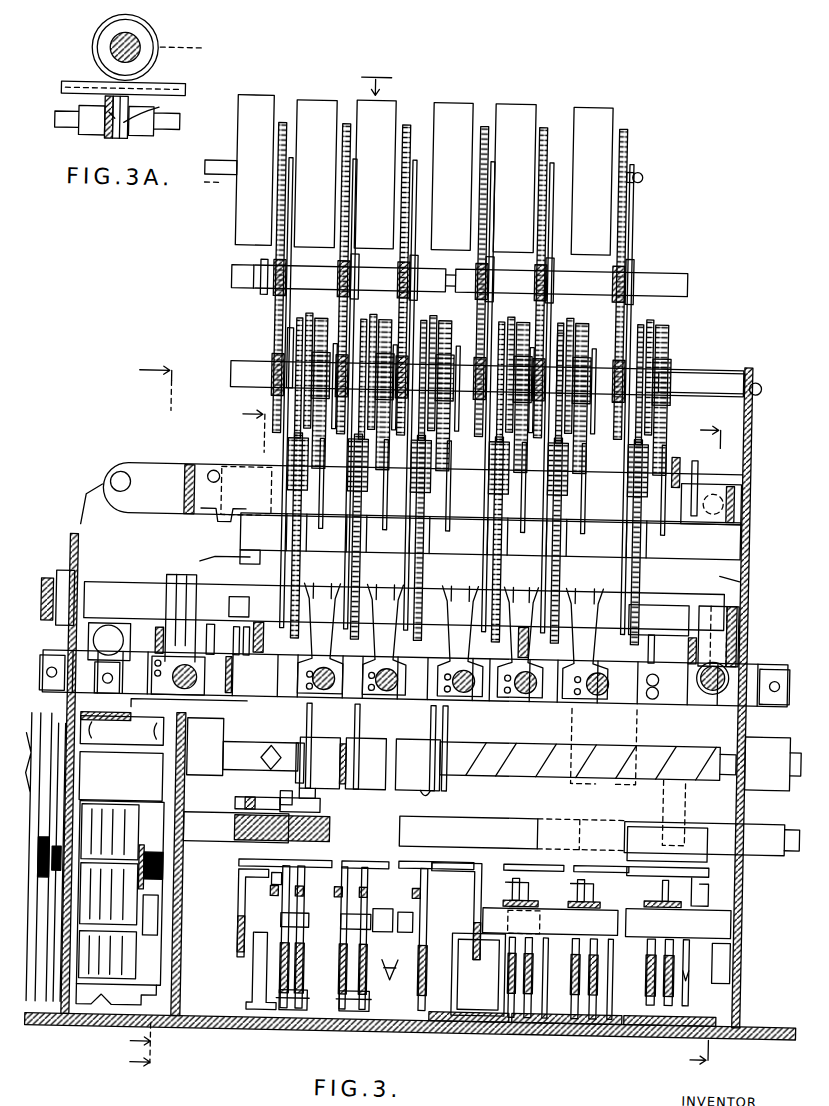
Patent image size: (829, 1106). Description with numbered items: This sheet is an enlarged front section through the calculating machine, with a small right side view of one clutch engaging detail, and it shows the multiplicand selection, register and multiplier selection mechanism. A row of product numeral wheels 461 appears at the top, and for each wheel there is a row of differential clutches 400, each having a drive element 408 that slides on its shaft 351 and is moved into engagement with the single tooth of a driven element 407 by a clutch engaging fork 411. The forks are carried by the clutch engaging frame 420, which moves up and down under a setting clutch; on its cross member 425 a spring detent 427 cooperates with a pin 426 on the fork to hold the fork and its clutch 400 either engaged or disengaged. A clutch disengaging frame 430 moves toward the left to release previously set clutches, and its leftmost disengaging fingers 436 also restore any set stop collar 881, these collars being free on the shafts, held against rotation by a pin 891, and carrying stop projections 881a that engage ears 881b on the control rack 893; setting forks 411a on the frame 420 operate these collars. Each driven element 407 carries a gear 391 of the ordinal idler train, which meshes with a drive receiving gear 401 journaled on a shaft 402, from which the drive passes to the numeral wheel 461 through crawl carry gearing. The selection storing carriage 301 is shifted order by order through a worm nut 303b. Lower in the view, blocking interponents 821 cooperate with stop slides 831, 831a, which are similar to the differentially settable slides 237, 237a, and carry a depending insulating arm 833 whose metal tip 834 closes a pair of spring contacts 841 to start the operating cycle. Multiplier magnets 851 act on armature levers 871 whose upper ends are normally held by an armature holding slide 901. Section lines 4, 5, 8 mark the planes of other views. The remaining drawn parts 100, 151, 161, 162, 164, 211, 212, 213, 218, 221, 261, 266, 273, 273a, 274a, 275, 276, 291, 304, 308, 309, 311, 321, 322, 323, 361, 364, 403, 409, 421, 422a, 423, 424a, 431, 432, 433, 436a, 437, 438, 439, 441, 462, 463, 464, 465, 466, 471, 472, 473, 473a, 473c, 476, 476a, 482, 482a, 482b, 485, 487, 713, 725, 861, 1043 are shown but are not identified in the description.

In FIG. 3, the machine 100 is at (376, 78).
In FIG. 3, the shaft 151 is at (478, 816).
In FIG. 3, the shaft 161 is at (190, 828).
In FIG. 3, the coil housing 162 is at (189, 860).
In FIG. 3, the frame plate 164 is at (750, 888).
In FIG. 3, the sleeve 211 is at (340, 834).
In FIG. 3, the rod 212 is at (348, 944).
In FIG. 3, the guide 213 is at (310, 900).
In FIG. 3, the block 218 is at (325, 806).
In FIG. 3, the collar 221 is at (482, 809).
In FIG. 3, the differentially settable slide 237 is at (323, 1001).
In FIG. 3, the differentially settable slide 237a is at (255, 1008).
In FIG. 3, the pin 261 is at (395, 932).
In FIG. 3, the spring 266 is at (393, 985).
In FIG. 3, the bar 273 is at (372, 900).
In FIG. 3, the bar 273a is at (632, 840).
In FIG. 3, the link 274a is at (575, 826).
In FIG. 3, the bracket 275 is at (245, 890).
In FIG. 3, the channel 276 is at (462, 865).
In FIG. 3, the stop 291 is at (287, 875).
In FIG. 3, the selection storing carriage 301 is at (312, 762).
In FIG. 3, the worm nut 303b is at (470, 774).
In FIG. 3, the lever 304 is at (317, 792).
In FIG. 3, the shaft end 308 is at (590, 741).
In FIG. 3, the bearing block 309 is at (222, 764).
In FIG. 3, the clutch 311 is at (364, 764).
In FIG. 3, the cam 321 is at (446, 762).
In FIG. 3, the sleeve 322 is at (268, 745).
In FIG. 3, the spring 323 is at (420, 801).
In FIG. 3A, the shaft 351 is at (104, 45).
In FIG. 3, the shaft 351 is at (740, 622).
In FIG. 3, the block 361 is at (60, 577).
In FIG. 3, the gear 364 is at (46, 585).
In FIG. 3A, the gear 391 is at (146, 36).
In FIG. 3, the gear 391 is at (659, 620).
In FIG. 3A, the differential clutch 400 is at (198, 45).
In FIG. 3, the differential clutch 400 is at (596, 631).
In FIG. 3, the drive receiving gear 401 is at (246, 554).
In FIG. 3, the shaft 402 is at (240, 538).
In FIG. 3A, the bar 403 is at (150, 88).
In FIG. 3, the bar 403 is at (456, 647).
In FIG. 3, the clutch driven element 407 is at (570, 600).
In FIG. 3, the clutch drive element 408 is at (510, 600).
In FIG. 3, the rocker 409 is at (440, 600).
In FIG. 3A, the clutch engaging fork 411 is at (150, 112).
In FIG. 3, the clutch engaging fork 411 is at (575, 646).
In FIG. 3, the setting fork 411a is at (322, 600).
In FIG. 3, the clutch engaging frame 420 is at (272, 691).
In FIG. 3A, the shaft 421 is at (58, 136).
In FIG. 3, the shaft 421 is at (317, 746).
In FIG. 3, the plate 422a is at (410, 663).
In FIG. 3, the block 423 is at (655, 700).
In FIG. 3, the spacer 424a is at (424, 679).
In FIG. 3A, the cross member 425 is at (100, 112).
In FIG. 3, the cross member 425 is at (460, 740).
In FIG. 3A, the pin 426 is at (116, 136).
In FIG. 3, the pin 426 is at (449, 748).
In FIG. 3A, the spring detent 427 is at (100, 136).
In FIG. 3, the spring detent 427 is at (386, 745).
In FIG. 3, the clutch disengaging frame 430 is at (200, 482).
In FIG. 3, the rail 431 is at (160, 468).
In FIG. 3, the bearing 432 is at (730, 478).
In FIG. 3, the bushing 433 is at (188, 468).
In FIG. 3, the disengaging finger 436 is at (200, 522).
In FIG. 3, the pawl 436a is at (219, 628).
In FIG. 3, the bracket 437 is at (232, 468).
In FIG. 3, the arm 438 is at (765, 574).
In FIG. 3, the shaft 439 is at (110, 640).
In FIG. 3, the shaft 441 is at (735, 668).
In FIG. 3, the product numeral wheel 461 is at (256, 98).
In FIG. 3, the shaft 462 is at (211, 158).
In FIG. 3, the drum 463 is at (282, 130).
In FIG. 3, the chain 464 is at (620, 245).
In FIG. 3, the shaft 465 is at (232, 368).
In FIG. 3, the shaft 466 is at (226, 279).
In FIG. 3, the sprocket 471 is at (340, 268).
In FIG. 3, the sprocket 472 is at (620, 270).
In FIG. 3, the sprocket 473 is at (456, 330).
In FIG. 3, the sprocket 473a is at (576, 330).
In FIG. 3, the sprocket 473c is at (625, 330).
In FIG. 3, the rod 476 is at (493, 486).
In FIG. 3, the rod 476a is at (340, 300).
In FIG. 3, the sprocket 482 is at (467, 465).
In FIG. 3, the sprocket 482a is at (266, 368).
In FIG. 3, the rod 482b is at (282, 385).
In FIG. 3, the bushing 485 is at (680, 452).
In FIG. 3, the plate 487 is at (700, 455).
In FIG. 3, the plate 713 is at (54, 745).
In FIG. 3, the bracket 725 is at (42, 672).
In FIG. 3, the blocking interponent 821 is at (584, 890).
In FIG. 3, the stop slide 831 is at (600, 1012).
In FIG. 3, the stop slide 831a is at (520, 1020).
In FIG. 3, the depending arm 833 is at (640, 950).
In FIG. 3, the metal tip 834 is at (700, 955).
In FIG. 3, the spring contact 841 is at (560, 960).
In FIG. 3, the multiplier magnet 851 is at (100, 998).
In FIG. 3, the core 861 is at (70, 992).
In FIG. 3, the armature lever 871 is at (165, 968).
In FIG. 3, the settable collar 881 is at (404, 606).
In FIG. 3, the stop projection 881a is at (163, 616).
In FIG. 3, the ear 881b is at (246, 607).
In FIG. 3, the pin 891 is at (205, 645).
In FIG. 3, the control rack 893 is at (205, 565).
In FIG. 3, the armature holding slide 901 is at (122, 731).
In FIG. 3, the shaft 1043 is at (663, 367).
In FIG. 3, the section line 4 is at (697, 746).
In FIG. 3, the section line 5 is at (140, 712).
In FIG. 3, the section line 8 is at (190, 739).